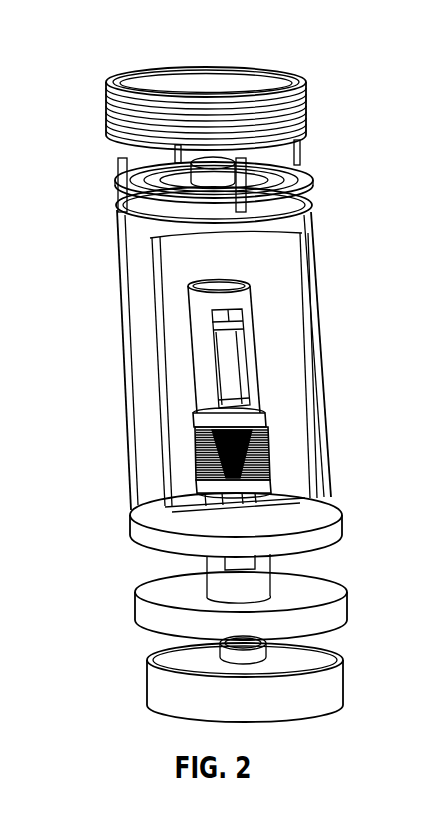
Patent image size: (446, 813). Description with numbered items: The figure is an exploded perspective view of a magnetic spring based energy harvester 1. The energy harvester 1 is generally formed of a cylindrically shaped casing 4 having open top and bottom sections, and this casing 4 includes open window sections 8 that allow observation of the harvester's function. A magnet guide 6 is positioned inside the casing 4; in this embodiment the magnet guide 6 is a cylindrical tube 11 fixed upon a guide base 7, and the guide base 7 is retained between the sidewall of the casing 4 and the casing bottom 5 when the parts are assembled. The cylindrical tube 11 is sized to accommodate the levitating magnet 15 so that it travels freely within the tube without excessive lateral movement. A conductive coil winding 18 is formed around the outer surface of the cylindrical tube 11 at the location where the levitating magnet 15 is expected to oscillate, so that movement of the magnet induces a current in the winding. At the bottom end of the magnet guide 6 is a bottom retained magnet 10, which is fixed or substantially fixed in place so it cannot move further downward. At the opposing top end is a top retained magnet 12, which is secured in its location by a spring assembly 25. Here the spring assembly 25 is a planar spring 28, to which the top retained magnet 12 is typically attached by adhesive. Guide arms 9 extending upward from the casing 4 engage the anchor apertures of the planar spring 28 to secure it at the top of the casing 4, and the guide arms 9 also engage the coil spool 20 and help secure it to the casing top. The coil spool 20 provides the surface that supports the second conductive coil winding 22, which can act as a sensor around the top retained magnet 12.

The energy harvester 1 is at (346, 423).
The casing 4 is at (328, 392).
The casing bottom 5 is at (331, 691).
The magnet guide 6 is at (246, 300).
The guide base 7 is at (336, 609).
The window sections 8 is at (176, 284).
The guide arms 9 is at (305, 159).
The bottom retained magnet 10 is at (226, 649).
The cylindrical tube 11 is at (253, 358).
The top retained magnet 12 is at (196, 173).
The levitating magnet 15 is at (228, 381).
The conductive coil winding 18 is at (198, 458).
The coil spool 20 is at (228, 75).
The second conductive coil winding 22 is at (302, 105).
The spring assembly 25 is at (100, 177).
The planar spring 28 is at (288, 177).